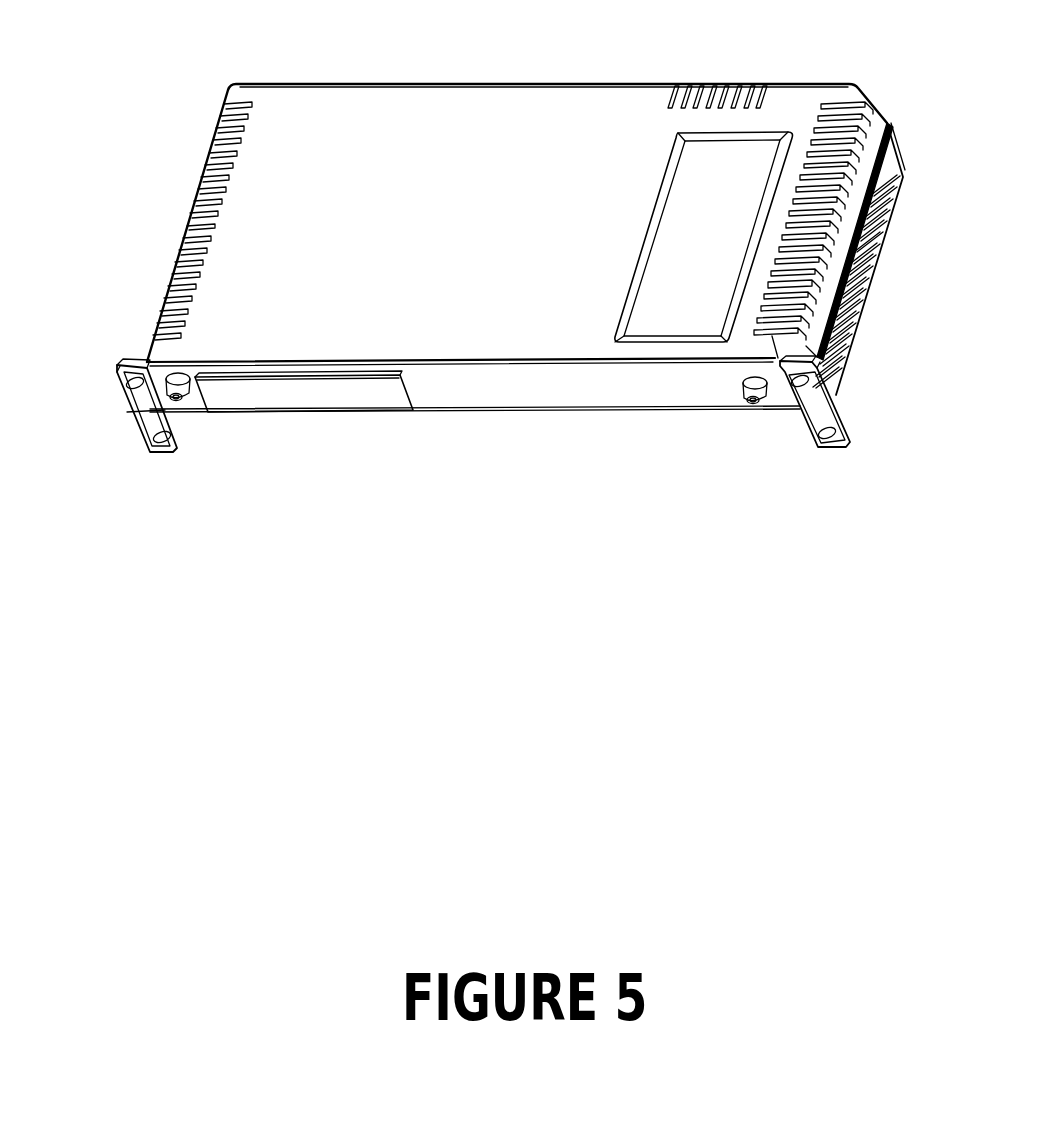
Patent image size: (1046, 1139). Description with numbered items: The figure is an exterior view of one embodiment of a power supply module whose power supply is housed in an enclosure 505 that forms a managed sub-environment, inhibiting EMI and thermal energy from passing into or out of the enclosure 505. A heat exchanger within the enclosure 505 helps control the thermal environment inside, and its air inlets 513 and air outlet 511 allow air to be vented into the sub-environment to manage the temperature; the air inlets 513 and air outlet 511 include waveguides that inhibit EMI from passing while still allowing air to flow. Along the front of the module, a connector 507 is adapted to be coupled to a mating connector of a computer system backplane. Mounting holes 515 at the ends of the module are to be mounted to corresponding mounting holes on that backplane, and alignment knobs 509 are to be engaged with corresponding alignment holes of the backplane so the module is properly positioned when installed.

The enclosure 505 is at (490, 85).
The connector 507 is at (346, 412).
The alignment knobs 509 is at (188, 418).
The air outlet 511 is at (192, 193).
The air inlets 513 is at (712, 85).
The mounting holes 515 is at (140, 447).